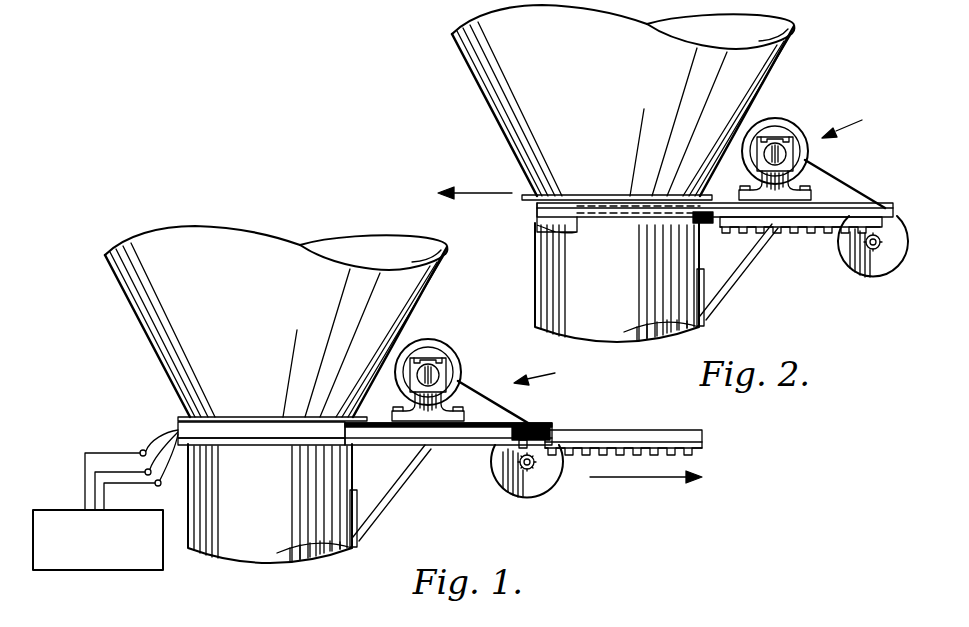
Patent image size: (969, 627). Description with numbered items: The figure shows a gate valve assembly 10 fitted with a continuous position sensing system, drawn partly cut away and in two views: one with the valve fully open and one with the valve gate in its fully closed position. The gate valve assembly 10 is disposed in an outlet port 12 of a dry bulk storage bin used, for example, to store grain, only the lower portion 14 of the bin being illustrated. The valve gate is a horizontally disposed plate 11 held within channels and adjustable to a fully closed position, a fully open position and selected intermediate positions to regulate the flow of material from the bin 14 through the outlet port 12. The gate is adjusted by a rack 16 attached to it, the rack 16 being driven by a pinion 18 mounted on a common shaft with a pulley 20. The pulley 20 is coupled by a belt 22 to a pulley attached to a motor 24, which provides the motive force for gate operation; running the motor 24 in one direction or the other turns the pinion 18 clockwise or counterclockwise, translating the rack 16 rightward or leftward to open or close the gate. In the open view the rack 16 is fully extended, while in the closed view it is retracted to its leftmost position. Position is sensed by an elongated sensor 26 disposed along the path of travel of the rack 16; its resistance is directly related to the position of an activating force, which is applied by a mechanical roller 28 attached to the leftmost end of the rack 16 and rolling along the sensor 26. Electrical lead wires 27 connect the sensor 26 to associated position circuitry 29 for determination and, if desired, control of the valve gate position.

In FIG. 1, the gate valve assembly 10 is at (547, 373).
In FIG. 2, the gate valve assembly 10 is at (855, 123).
In FIG. 2, the valve gate plate 11 is at (567, 195).
In FIG. 1, the outlet port 12 is at (196, 556).
In FIG. 2, the outlet port 12 is at (545, 256).
In FIG. 1, the lower portion of storage bin 14 is at (107, 254).
In FIG. 2, the lower portion of storage bin 14 is at (490, 71).
In FIG. 1, the rack 16 is at (605, 433).
In FIG. 2, the rack 16 is at (780, 226).
In FIG. 1, the pinion 18 is at (536, 467).
In FIG. 2, the pinion 18 is at (876, 252).
In FIG. 1, the pulley 20 is at (517, 497).
In FIG. 2, the pulley 20 is at (898, 261).
In FIG. 1, the belt 22 is at (498, 401).
In FIG. 2, the belt 22 is at (841, 182).
In FIG. 1, the motor 24 is at (440, 346).
In FIG. 2, the motor 24 is at (790, 122).
In FIG. 1, the elongated sensor 26 is at (437, 445).
In FIG. 1, the electrical lead wires 27 is at (178, 431).
In FIG. 1, the mechanical roller 28 is at (541, 424).
In FIG. 2, the mechanical roller 28 is at (705, 226).
In FIG. 1, the position circuitry 29 is at (66, 510).